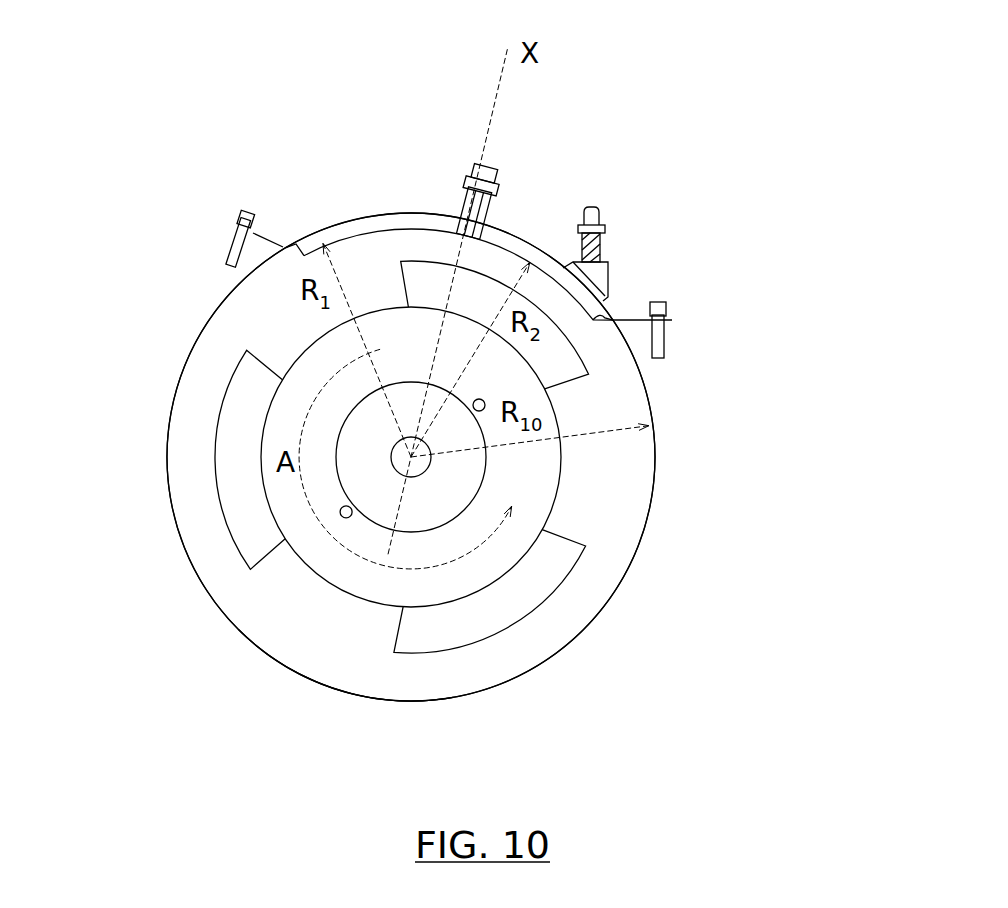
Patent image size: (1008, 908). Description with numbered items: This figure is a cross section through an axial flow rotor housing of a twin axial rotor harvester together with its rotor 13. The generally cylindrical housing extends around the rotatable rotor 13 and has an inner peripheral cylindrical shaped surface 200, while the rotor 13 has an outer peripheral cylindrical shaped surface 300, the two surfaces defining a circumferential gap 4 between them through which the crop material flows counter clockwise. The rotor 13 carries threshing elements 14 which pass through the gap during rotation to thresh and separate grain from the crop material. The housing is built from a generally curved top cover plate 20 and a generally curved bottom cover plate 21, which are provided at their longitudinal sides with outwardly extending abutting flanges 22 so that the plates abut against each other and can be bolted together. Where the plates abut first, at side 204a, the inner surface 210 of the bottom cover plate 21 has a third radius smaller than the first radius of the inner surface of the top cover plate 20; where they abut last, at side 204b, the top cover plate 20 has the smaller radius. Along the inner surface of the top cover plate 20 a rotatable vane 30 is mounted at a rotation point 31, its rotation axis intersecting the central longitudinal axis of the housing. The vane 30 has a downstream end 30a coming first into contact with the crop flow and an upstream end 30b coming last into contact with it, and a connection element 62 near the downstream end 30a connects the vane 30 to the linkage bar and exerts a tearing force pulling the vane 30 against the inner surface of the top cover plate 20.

The inner peripheral cylindrical shaped surface 200 is at (630, 580).
The circumferential gap 4 is at (600, 528).
The bottom cover plate 21 is at (288, 668).
The inner surface of the bottom cover plate 210 is at (340, 692).
The outer peripheral cylindrical shaped surface 300 is at (300, 565).
The rotor 13 is at (545, 453).
The threshing elements 14 is at (510, 240).
The top cover plate 20 is at (417, 213).
The rotatable vane 30 is at (382, 217).
The upstream end 30b is at (357, 217).
The downstream end 30a is at (615, 320).
The rotation point 31 is at (480, 167).
The connection element 62 is at (583, 207).
The longitudinally extending side 204b is at (285, 243).
The longitudinal side 204a is at (615, 320).
The abutting flange 22 is at (240, 228).